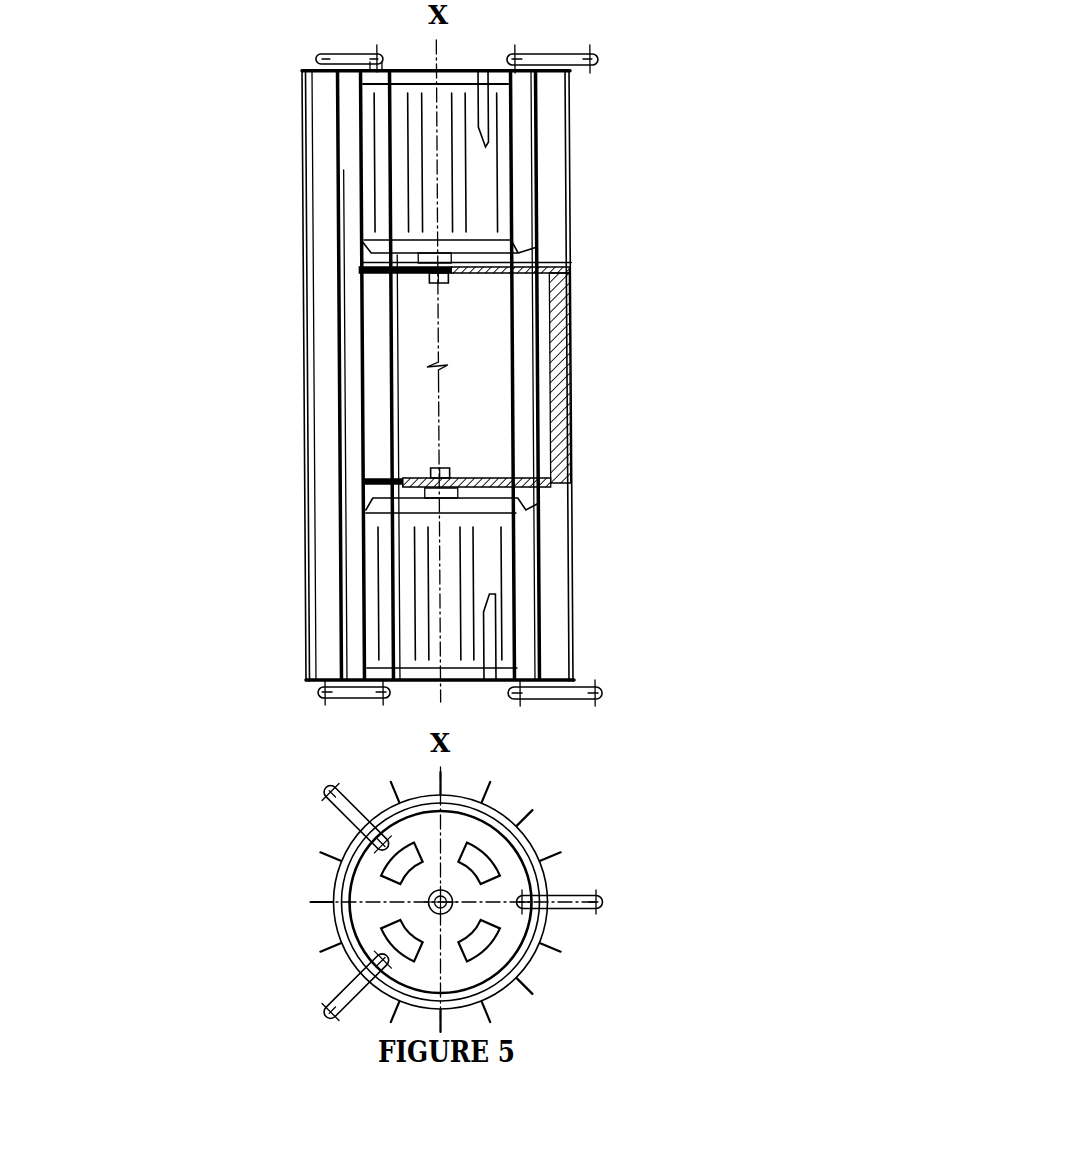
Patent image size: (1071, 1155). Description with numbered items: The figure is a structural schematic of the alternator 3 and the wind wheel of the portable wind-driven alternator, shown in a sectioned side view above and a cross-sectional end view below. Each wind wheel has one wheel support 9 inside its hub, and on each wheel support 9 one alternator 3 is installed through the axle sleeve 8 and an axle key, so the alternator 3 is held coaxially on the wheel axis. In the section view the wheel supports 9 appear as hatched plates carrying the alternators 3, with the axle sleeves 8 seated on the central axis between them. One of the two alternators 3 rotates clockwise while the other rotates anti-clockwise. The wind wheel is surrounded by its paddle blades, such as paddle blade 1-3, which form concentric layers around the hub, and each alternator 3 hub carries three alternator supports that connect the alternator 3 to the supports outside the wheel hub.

The paddle blade 1-3 is at (352, 301).
The alternator 3 is at (447, 568).
The axle sleeve 8 is at (447, 472).
The wheel support 9 is at (490, 481).